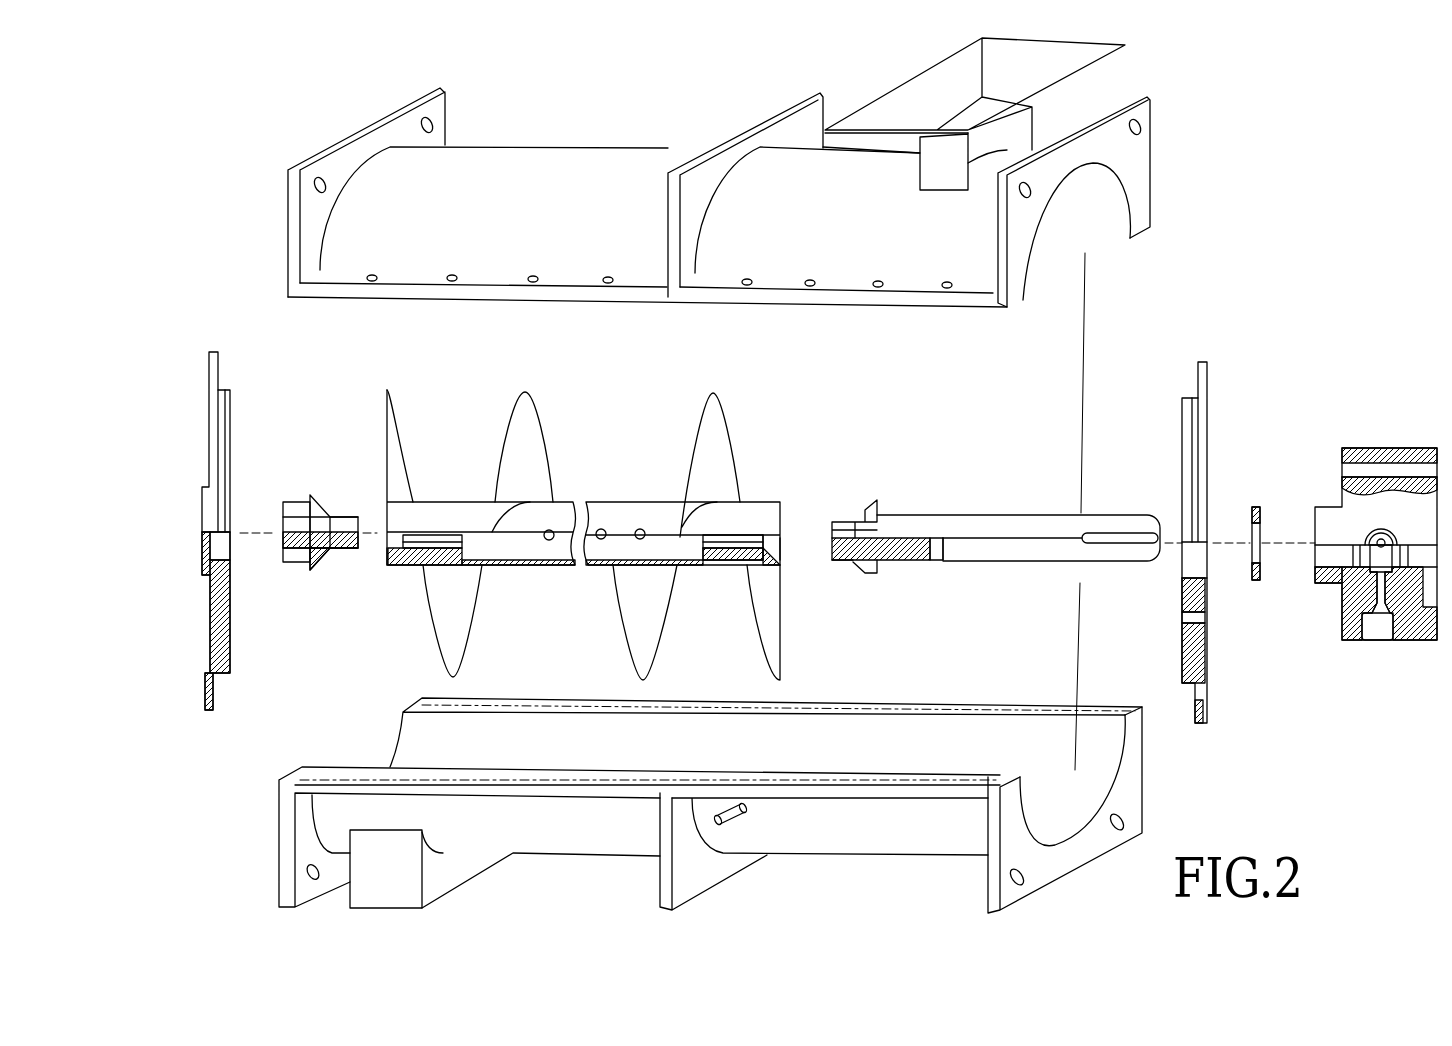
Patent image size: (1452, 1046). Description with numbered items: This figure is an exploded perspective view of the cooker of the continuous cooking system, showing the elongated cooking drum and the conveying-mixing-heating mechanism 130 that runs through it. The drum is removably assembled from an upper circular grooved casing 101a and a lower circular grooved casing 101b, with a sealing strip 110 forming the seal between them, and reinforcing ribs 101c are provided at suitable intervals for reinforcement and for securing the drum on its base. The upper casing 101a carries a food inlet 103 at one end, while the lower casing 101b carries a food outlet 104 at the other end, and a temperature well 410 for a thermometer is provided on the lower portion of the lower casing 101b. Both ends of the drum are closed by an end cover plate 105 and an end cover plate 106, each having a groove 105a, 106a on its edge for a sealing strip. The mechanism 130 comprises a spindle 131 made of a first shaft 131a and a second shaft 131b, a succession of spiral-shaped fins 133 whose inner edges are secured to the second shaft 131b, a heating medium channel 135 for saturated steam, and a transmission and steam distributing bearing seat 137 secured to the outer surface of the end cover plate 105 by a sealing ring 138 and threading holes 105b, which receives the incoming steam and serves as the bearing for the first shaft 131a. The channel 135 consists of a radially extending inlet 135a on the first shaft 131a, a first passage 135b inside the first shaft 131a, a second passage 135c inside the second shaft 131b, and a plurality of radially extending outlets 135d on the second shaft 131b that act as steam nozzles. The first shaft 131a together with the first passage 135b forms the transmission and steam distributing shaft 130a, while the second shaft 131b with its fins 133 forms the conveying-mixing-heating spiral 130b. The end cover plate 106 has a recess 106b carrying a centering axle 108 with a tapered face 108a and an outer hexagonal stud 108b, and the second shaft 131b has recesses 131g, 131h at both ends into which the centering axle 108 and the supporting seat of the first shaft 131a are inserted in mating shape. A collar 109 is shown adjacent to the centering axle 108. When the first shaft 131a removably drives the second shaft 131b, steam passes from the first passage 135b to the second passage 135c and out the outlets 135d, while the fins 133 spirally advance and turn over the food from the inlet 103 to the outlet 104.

The upper circular grooved casing 101a is at (1143, 143).
The lower circular grooved casing 101b is at (920, 855).
The reinforcing ribs 101c is at (821, 92).
The food inlet 103 is at (937, 80).
The food outlet 104 is at (385, 893).
The end cover plate 105 is at (1197, 536).
The groove 105a is at (1192, 400).
The threading holes 105b is at (1185, 617).
The end cover plate 106 is at (220, 524).
The groove 106a is at (221, 392).
The recess 106b is at (226, 553).
The centering axle 108 is at (325, 528).
The tapered face 108a is at (313, 500).
The outer hexagonal stud 108b is at (345, 522).
The collar 109 is at (283, 507).
The sealing strip 110 is at (980, 777).
The conveying-mixing-heating mechanism 130 is at (755, 497).
The transmission and steam distributing shaft 130a is at (1018, 505).
The conveying-mixing-heating spiral 130b is at (613, 412).
The spindle 131 is at (883, 562).
The first shaft 131a is at (966, 584).
The second shaft 131b is at (780, 568).
The recess 131g is at (777, 550).
The recess 131h is at (390, 555).
The spiral-shaped fins 133 is at (657, 670).
The heating medium channel 135 is at (753, 473).
The radially extending inlet 135a is at (938, 548).
The first passage 135b is at (832, 540).
The second passage 135c is at (750, 540).
The radially extending outlets 135d is at (640, 530).
The transmission and steam distributing bearing seat 137 is at (1340, 640).
The sealing ring 138 is at (1255, 583).
The temperature well 410 is at (720, 825).